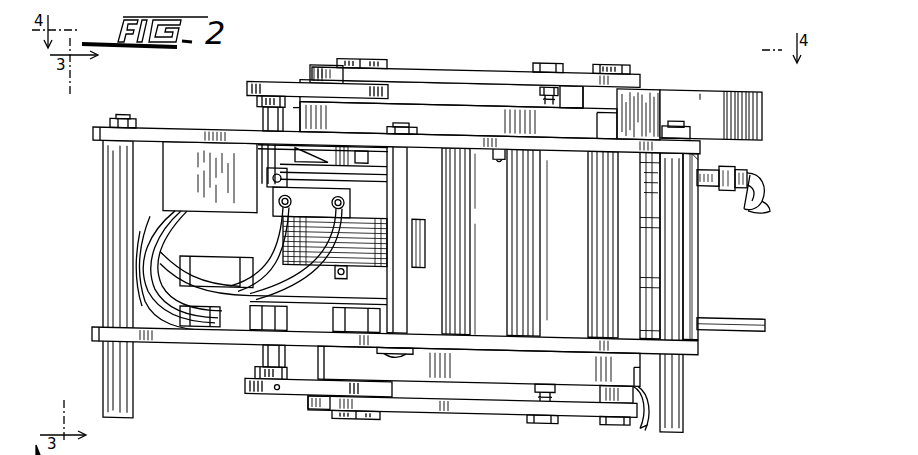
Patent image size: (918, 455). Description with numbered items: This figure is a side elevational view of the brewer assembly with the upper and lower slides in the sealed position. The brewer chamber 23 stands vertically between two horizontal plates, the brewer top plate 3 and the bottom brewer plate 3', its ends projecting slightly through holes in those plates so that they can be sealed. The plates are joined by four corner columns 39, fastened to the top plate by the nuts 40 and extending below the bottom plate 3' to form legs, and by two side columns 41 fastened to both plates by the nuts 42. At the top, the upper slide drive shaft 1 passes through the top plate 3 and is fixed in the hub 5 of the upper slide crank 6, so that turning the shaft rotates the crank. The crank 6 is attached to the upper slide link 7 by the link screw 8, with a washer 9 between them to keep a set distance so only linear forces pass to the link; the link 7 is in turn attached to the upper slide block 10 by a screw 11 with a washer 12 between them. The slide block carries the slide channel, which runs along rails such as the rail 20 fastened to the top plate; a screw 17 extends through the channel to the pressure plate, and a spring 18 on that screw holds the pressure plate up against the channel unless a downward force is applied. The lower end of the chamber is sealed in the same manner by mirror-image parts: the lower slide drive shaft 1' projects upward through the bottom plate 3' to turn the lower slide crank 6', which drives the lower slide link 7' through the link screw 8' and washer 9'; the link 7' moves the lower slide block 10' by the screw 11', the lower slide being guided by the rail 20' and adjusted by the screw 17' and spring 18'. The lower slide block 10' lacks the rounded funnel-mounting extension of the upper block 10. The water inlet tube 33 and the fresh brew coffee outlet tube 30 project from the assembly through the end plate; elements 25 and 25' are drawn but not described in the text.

The upper slide drive shaft 1 is at (256, 114).
The lower slide drive shaft 1' is at (260, 355).
The brewer top plate 3 is at (396, 131).
The bottom brewer plate 3' is at (395, 352).
The hub 5 is at (257, 92).
The upper slide crank 6 is at (317, 77).
The lower slide crank 6' is at (318, 398).
The upper slide link 7 is at (476, 63).
The lower slide link 7' is at (472, 421).
The link screw 8 is at (362, 54).
The link screw 8' is at (355, 426).
The washer 9 is at (326, 63).
The washer 9' is at (348, 419).
The upper slide block 10 is at (711, 103).
The lower slide block 10' is at (643, 415).
The screw 11 is at (620, 56).
The screw 11' is at (610, 431).
The washer 12 is at (643, 80).
The screw 17 is at (533, 94).
The screw 17' is at (531, 391).
The spring 18 is at (571, 97).
The spring 18' is at (596, 394).
The rail 20 is at (458, 109).
The rail 20' is at (479, 375).
The brewer chamber 23 is at (562, 320).
The bolt 25 is at (547, 56).
The bolt 25' is at (543, 431).
The fresh brew coffee outlet tube 30 is at (745, 303).
The water inlet tube 33 is at (703, 166).
The corner column 39 is at (105, 236).
The nut 40 is at (115, 114).
The side column 41 is at (388, 145).
The nut 42 is at (419, 116).